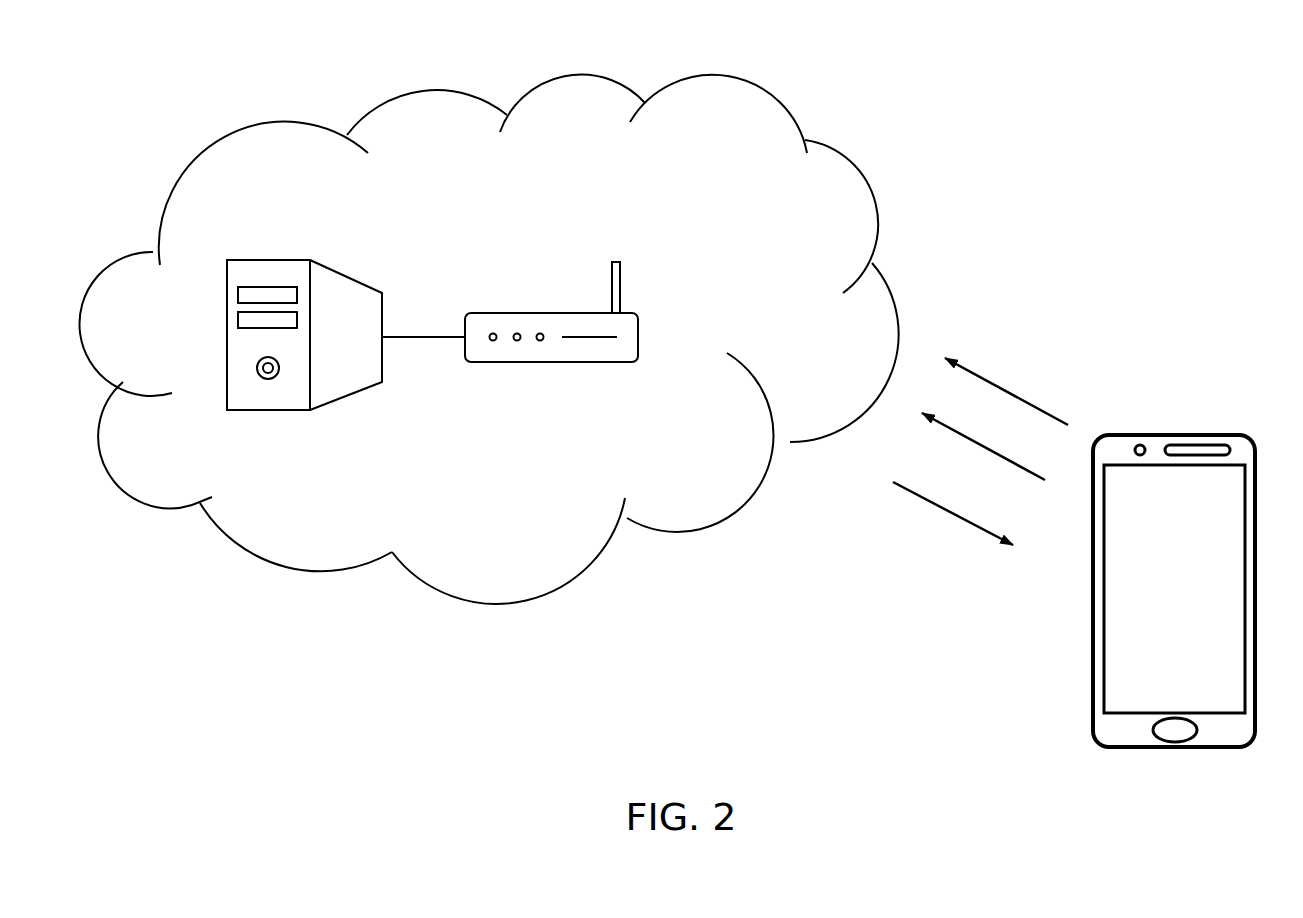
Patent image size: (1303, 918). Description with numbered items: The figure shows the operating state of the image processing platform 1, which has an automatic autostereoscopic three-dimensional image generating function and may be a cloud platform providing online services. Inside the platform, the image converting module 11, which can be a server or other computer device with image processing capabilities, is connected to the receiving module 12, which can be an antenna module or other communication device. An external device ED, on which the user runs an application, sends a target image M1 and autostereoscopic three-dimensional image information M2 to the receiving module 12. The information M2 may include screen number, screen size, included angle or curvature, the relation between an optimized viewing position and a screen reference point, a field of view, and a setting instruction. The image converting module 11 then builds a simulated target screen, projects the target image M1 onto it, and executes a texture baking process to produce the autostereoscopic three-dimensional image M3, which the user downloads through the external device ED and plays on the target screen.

The image processing platform 1 is at (268, 122).
The image converting module 11 is at (273, 260).
The receiving module 12 is at (512, 313).
The external device ED is at (1163, 435).
The target image M1 is at (1006, 391).
The autostereoscopic 3D image information M2 is at (983, 446).
The autostereoscopic 3D image M3 is at (953, 513).